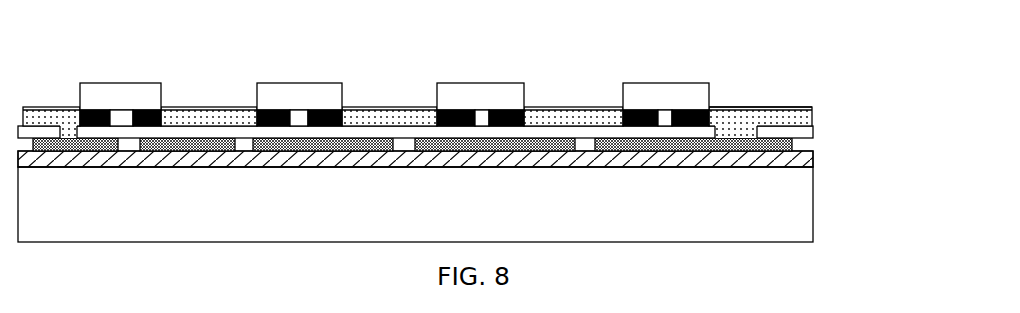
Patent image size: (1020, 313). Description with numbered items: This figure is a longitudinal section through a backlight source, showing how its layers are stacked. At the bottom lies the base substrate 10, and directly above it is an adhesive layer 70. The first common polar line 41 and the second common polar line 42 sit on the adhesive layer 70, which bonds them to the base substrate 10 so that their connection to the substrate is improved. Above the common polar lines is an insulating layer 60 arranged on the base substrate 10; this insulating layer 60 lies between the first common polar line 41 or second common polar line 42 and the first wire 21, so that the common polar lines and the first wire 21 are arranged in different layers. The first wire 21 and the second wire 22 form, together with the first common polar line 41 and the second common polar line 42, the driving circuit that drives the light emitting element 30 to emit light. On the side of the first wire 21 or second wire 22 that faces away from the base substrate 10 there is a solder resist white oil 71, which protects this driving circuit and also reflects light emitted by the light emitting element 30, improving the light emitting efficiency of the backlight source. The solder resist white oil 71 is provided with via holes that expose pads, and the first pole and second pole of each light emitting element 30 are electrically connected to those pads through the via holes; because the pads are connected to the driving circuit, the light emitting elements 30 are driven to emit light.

The base substrate 10 is at (795, 205).
The adhesive layer 70 is at (810, 163).
The first common polar line 41 is at (412, 104).
The second common polar line 42 is at (196, 148).
The insulating layer 60 is at (374, 135).
The first wire 21 is at (417, 82).
The second wire 22 is at (568, 123).
The solder resist white oil 71 is at (762, 110).
The light emitting element 30 is at (119, 95).